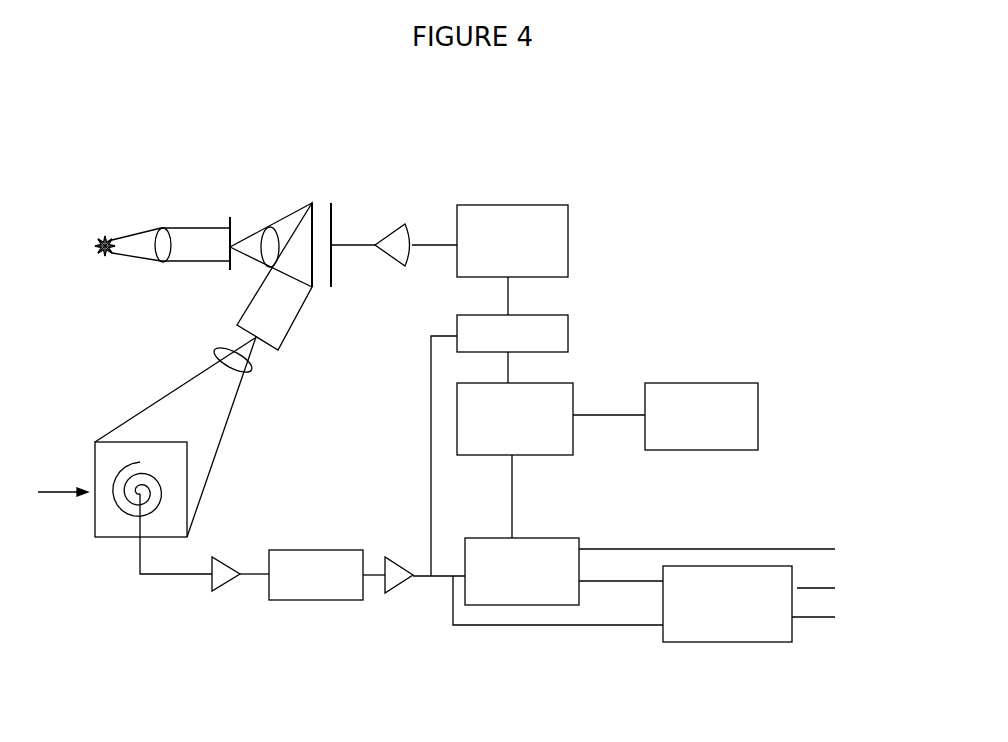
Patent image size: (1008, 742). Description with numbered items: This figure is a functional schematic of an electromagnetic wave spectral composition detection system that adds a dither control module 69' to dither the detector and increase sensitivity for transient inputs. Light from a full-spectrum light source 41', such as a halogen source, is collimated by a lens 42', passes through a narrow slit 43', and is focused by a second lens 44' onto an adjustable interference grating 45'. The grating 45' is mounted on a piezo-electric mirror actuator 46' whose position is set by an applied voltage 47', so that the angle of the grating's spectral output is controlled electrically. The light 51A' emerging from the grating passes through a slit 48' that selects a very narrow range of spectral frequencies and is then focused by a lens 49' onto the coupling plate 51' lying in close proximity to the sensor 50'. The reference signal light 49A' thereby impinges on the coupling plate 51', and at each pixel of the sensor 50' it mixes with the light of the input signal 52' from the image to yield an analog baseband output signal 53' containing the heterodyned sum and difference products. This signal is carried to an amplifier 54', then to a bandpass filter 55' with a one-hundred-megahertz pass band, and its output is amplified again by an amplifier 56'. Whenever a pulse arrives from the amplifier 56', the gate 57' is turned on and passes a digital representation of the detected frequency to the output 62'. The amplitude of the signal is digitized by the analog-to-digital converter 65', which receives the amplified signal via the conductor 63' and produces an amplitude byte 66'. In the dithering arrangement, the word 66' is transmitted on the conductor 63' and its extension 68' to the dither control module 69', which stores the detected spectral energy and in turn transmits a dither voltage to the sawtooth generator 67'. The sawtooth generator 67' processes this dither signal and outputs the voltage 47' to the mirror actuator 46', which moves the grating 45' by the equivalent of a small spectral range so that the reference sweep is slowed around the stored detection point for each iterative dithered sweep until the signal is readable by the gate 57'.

The full-spectrum light source 41' is at (92, 218).
The lens 42' is at (171, 218).
The narrow slit 43' is at (233, 225).
The lens 44' is at (271, 235).
The adjustable interference grating 45' is at (313, 224).
The mirror actuator 46' is at (353, 225).
The applied voltage 47' is at (416, 216).
The slit 48' is at (283, 359).
The lens 49' is at (226, 390).
The reference signal 49A' is at (264, 437).
The sensor 50' is at (110, 532).
The coupling plate 51' is at (117, 455).
The light emerging from the grating 51A' is at (305, 276).
The input signal 52' is at (63, 459).
The analog baseband output signal 53' is at (176, 563).
The amplifier 54' is at (232, 605).
The bandpass filter 55' is at (327, 603).
The amplifier 56' is at (425, 606).
The gate 57' is at (552, 555).
The output 62' is at (727, 522).
The conductor 63' is at (561, 633).
The analog-to-digital converter 65' is at (833, 590).
The amplitude byte 66' is at (842, 647).
The sawtooth generator 67' is at (512, 238).
The conductor extension 68' is at (410, 456).
The dither control module 69' is at (562, 344).